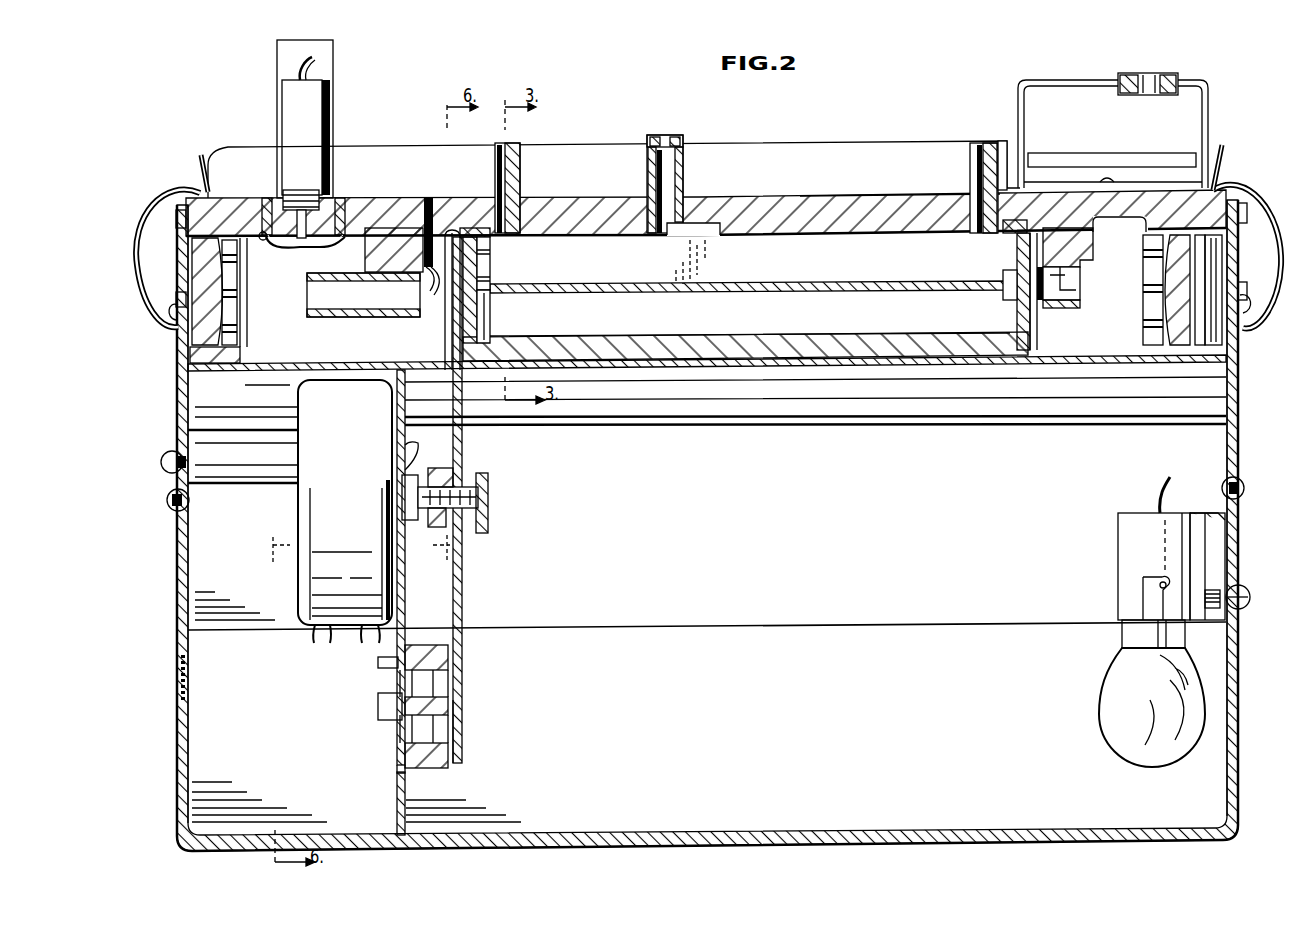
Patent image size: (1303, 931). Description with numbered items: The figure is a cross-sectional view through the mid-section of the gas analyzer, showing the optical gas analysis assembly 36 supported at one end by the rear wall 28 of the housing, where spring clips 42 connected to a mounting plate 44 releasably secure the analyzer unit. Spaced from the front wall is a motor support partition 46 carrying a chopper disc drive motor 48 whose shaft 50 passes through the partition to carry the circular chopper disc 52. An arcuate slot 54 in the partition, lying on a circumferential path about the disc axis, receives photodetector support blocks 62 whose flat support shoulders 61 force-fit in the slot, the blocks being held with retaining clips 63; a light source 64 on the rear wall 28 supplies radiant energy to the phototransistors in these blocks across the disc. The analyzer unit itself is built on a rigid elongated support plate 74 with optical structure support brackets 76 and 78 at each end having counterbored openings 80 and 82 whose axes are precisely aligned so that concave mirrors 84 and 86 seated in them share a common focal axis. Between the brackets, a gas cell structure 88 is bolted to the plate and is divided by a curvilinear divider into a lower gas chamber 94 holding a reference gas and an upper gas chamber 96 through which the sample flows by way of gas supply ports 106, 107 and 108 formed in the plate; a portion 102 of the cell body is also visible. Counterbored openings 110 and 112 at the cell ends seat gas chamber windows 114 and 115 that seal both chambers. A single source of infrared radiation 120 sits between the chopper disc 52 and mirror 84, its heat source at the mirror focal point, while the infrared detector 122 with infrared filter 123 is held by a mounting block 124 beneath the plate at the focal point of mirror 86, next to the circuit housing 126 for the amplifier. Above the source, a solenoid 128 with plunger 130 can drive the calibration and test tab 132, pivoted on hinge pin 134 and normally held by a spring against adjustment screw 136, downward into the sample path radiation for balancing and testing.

The rear wall 28 is at (1237, 693).
The optical gas analysis assembly 36 is at (782, 193).
The bail ring 42 is at (140, 235).
The mounting plate 44 is at (178, 390).
The motor support partition 46 is at (397, 795).
The chopper disc drive motor 48 is at (296, 586).
The shaft 50 is at (486, 497).
The circular chopper disc 52 is at (464, 437).
The arcuate slot 54 is at (412, 645).
The flat support shoulders 61 is at (406, 778).
The photodetector support blocks 62 is at (447, 768).
The retaining clips 63 is at (392, 678).
The light source 64 is at (1110, 724).
The support plate 74 is at (872, 192).
The optical structure support bracket 76 is at (240, 352).
The optical structure support bracket 78 is at (1158, 347).
The counterbored opening 80 is at (212, 363).
The counterbored opening 82 is at (1196, 347).
The concave mirror 84 is at (200, 268).
The concave mirror 86 is at (1188, 300).
The gas cell structure 88 is at (958, 350).
The lower gas chamber 94 is at (778, 323).
The upper gas chamber 96 is at (778, 273).
The end wall 102 is at (1005, 258).
The gas supply port 106 is at (523, 157).
The gas supply port 107 is at (676, 137).
The gas supply port 108 is at (962, 150).
The counterbored opening 110 is at (486, 325).
The counterbored opening 112 is at (1031, 325).
The gas chamber window 114 is at (490, 278).
The gas chamber window 115 is at (1013, 313).
The source of infrared radiation 120 is at (350, 318).
The infrared detector 122 is at (1080, 308).
The infrared filter 123 is at (1082, 290).
The mounting block 124 is at (1096, 250).
The circuit housing 126 is at (1207, 97).
The solenoid 128 is at (333, 108).
The plunger 130 is at (314, 187).
The calibration and test tab 132 is at (305, 240).
The hinge pin 134 is at (272, 239).
The adjustment screw 136 is at (342, 195).